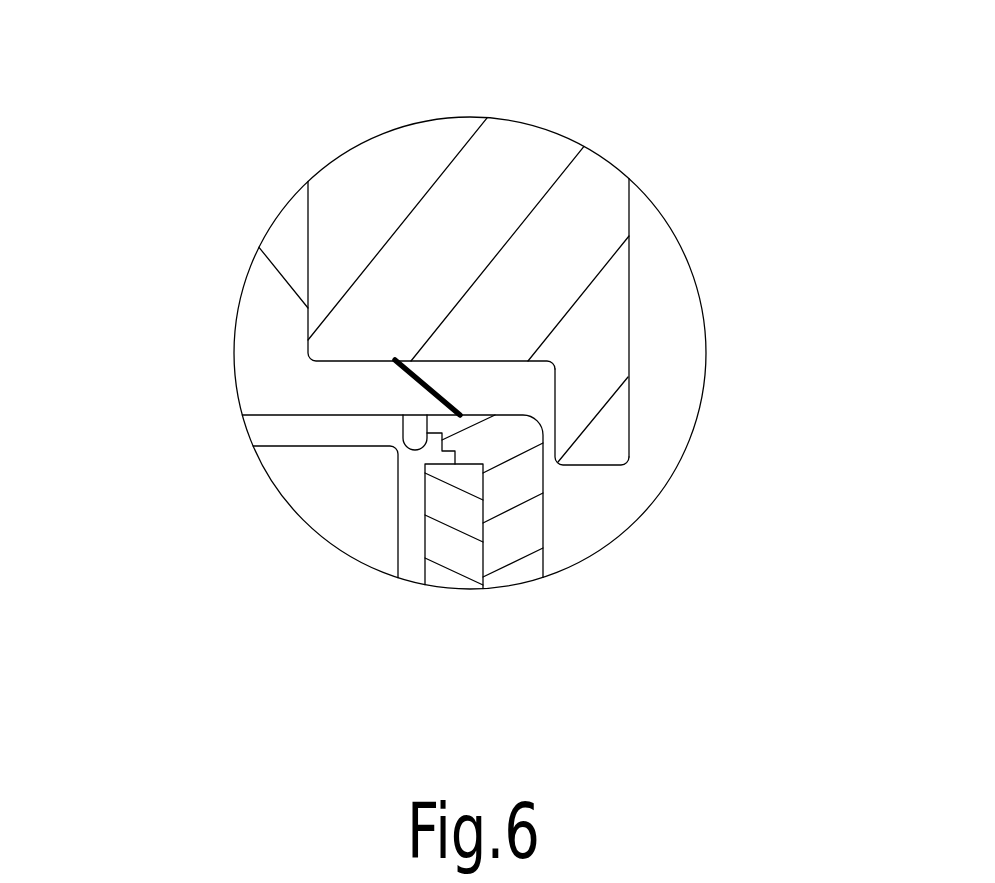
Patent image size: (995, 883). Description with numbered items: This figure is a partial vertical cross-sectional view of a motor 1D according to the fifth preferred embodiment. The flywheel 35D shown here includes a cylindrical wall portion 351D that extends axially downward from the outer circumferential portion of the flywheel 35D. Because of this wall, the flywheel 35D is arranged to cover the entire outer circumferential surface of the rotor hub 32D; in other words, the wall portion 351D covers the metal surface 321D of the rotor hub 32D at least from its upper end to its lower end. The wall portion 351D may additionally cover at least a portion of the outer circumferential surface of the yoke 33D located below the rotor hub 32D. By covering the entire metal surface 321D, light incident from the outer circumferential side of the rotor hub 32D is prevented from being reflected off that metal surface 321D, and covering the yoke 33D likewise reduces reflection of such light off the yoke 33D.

The motor 1D is at (80, 50).
The rotor hub 32D is at (130, 362).
The metal surface 321D is at (425, 389).
The yoke 33D is at (510, 492).
The flywheel 35D is at (523, 306).
The wall portion 351D is at (593, 430).